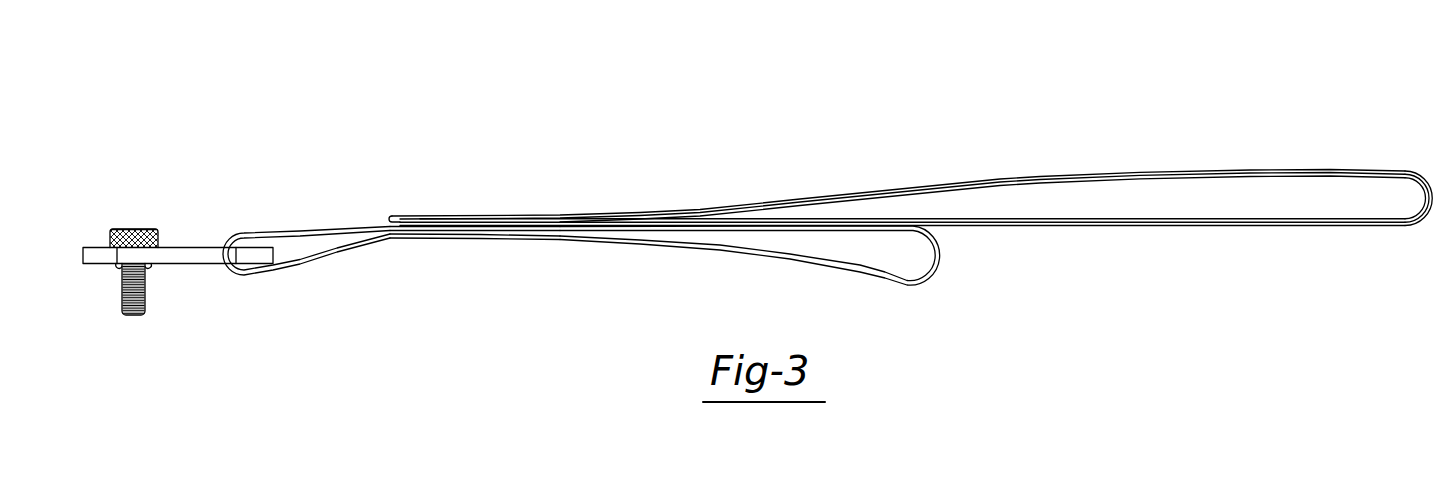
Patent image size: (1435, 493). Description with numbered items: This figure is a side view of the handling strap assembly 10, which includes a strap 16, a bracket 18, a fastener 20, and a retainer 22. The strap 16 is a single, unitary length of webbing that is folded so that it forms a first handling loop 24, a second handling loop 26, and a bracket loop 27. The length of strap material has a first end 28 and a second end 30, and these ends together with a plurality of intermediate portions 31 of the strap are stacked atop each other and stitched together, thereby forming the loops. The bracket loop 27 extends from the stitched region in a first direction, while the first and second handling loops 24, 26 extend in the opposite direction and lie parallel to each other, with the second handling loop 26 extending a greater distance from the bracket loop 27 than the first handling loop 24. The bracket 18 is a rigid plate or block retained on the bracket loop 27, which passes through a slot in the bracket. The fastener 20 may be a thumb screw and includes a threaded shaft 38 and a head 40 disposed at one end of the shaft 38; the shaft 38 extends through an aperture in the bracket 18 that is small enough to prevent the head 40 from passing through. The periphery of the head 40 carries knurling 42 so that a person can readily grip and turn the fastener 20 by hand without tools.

The handling strap assembly 10 is at (528, 85).
The strap 16 is at (716, 185).
The bracket 18 is at (190, 255).
The fastener 20 is at (121, 230).
The retainer 22 is at (117, 267).
The first handling loop 24 is at (790, 259).
The second handling loop 26 is at (1275, 226).
The bracket loop 27 is at (250, 277).
The first end 28 is at (493, 232).
The second end 30 is at (392, 219).
The intermediate portions 31 is at (408, 229).
The shaft 38 is at (143, 310).
The head 40 is at (133, 230).
The knurling 42 is at (160, 237).